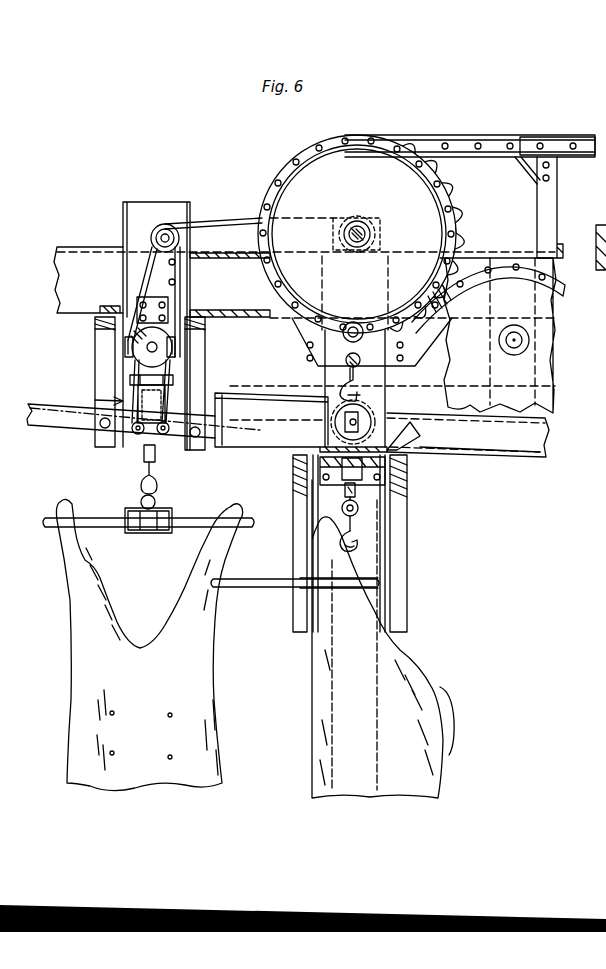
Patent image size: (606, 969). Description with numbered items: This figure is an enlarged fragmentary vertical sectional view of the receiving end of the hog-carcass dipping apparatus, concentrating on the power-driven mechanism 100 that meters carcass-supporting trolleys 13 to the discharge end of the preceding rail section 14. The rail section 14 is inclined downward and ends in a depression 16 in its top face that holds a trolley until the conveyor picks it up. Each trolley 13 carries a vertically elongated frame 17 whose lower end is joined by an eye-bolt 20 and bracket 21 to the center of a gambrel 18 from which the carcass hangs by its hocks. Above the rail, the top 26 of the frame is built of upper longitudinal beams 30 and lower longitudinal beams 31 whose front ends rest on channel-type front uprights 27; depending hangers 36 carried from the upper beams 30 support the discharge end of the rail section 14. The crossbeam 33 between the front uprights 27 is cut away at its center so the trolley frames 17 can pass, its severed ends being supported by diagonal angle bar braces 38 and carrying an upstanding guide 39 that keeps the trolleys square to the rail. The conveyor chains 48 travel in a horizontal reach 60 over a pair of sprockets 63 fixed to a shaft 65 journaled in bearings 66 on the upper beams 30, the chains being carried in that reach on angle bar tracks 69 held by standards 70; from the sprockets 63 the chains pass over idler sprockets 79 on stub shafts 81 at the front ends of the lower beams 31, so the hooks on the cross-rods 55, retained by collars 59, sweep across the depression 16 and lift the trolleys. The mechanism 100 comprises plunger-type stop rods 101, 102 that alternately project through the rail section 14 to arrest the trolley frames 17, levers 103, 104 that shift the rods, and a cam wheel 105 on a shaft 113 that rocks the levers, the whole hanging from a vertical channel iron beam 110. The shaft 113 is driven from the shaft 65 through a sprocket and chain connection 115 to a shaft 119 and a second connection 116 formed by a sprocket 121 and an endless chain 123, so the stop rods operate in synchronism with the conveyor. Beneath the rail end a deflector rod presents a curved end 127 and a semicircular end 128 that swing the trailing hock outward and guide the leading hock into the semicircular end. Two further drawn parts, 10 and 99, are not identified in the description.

The bracket plate 10 is at (168, 303).
The trolleys 13 is at (328, 423).
The preceding rail section 14 is at (66, 420).
The depression 16 is at (396, 408).
The trolley frames 17 is at (345, 482).
The gambrels 18 is at (190, 518).
The eye-bolts 20 is at (157, 493).
The brackets 21 is at (128, 516).
The top 26 is at (492, 468).
The front uprights 27 is at (316, 650).
The upper longitudinal beams 30 is at (560, 283).
The lower longitudinal beams 31 is at (524, 446).
The crossbeam 33 is at (400, 470).
The hangers 36 is at (205, 362).
The diagonal angle bar braces 38 is at (405, 541).
The guide 39 is at (262, 446).
The chains 48 is at (498, 150).
The cross-rods 55 is at (361, 362).
The collars 59 is at (340, 380).
The horizontal reach 60 is at (553, 142).
The sprockets 63 is at (450, 216).
The shaft 65 is at (362, 228).
The bearings 66 is at (378, 236).
The tracks 69 is at (474, 155).
The standards 70 is at (605, 196).
The idler sprockets 79 is at (550, 366).
The stub shafts 81 is at (522, 341).
The pin 99 is at (362, 336).
The mechanism 100 is at (145, 413).
The stop rod 101 is at (135, 434).
The stop rod 102 is at (165, 434).
The lever 103 is at (132, 380).
The lever 104 is at (173, 384).
The cam wheel 105 is at (164, 344).
The channel iron beam 110 is at (192, 204).
The shaft 113 is at (127, 345).
The sprocket and chain connection 115 is at (227, 220).
The sprocket and chain connection 116 is at (130, 293).
The shaft 119 is at (152, 237).
The sprocket 121 is at (168, 224).
The endless chain 123 is at (190, 273).
The curved end 127 is at (268, 590).
The semicircular end 128 is at (330, 584).